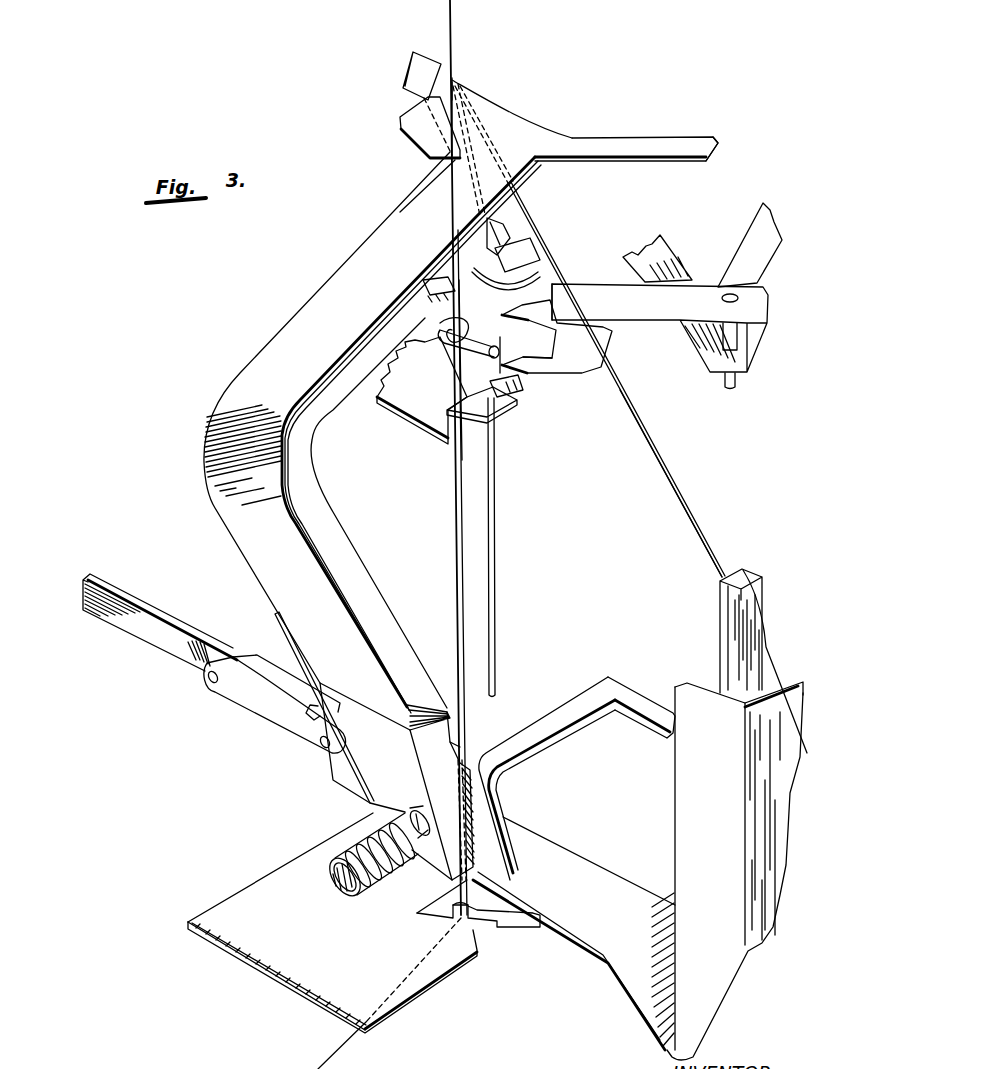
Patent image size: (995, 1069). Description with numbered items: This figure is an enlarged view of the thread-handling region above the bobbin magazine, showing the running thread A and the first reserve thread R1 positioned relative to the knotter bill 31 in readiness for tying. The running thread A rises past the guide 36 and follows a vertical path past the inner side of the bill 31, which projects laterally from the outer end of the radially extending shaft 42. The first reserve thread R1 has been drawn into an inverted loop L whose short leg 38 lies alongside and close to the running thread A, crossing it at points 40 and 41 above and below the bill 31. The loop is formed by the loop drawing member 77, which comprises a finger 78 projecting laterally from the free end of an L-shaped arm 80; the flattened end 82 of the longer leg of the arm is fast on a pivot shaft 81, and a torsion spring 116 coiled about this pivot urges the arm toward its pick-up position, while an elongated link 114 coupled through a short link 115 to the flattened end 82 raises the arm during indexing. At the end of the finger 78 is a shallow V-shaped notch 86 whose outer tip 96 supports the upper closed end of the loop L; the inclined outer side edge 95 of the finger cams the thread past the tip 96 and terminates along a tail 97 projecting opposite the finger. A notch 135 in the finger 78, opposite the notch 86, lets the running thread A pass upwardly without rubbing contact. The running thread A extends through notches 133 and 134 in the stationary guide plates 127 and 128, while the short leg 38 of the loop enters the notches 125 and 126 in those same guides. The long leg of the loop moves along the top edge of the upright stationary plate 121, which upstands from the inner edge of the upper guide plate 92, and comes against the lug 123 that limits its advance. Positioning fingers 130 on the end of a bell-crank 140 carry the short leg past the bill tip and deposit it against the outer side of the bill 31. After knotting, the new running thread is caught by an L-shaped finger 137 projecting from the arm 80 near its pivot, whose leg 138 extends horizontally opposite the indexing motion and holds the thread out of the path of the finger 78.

The bill 31 is at (440, 336).
The guide 36 is at (452, 913).
The short leg 38 is at (495, 528).
The crossing point 40 is at (450, 313).
The crossing point 41 is at (450, 367).
The shaft 42 is at (533, 252).
The loop drawing member 77 is at (447, 95).
The finger 78 is at (508, 138).
The arm 80 is at (291, 345).
The pivot shaft 81 is at (413, 812).
The flattened end 82 is at (383, 747).
The notch 86 is at (422, 101).
The upper guide plate 92 is at (288, 960).
The outer side edge 95 is at (603, 135).
The outer tip 96 is at (422, 62).
The tail 97 is at (657, 146).
The elongated link 114 is at (140, 624).
The short link 115 is at (268, 700).
The torsion spring 116 is at (330, 858).
The upright stationary plate 121 is at (781, 763).
The lug 123 is at (756, 606).
The notch 125 is at (510, 235).
The notch 126 is at (517, 393).
The stationary guide 127 is at (515, 290).
The stationary guide 128 is at (423, 410).
The positioning fingers 130 is at (512, 358).
The notch 133 is at (430, 278).
The notch 134 is at (470, 415).
The notch 135 is at (483, 122).
The L-shaped finger 137 is at (540, 725).
The leg 138 is at (652, 708).
The bell-crank 140 is at (640, 307).
The running thread A is at (453, 570).
The inverted loop L is at (624, 416).
The first reserve thread R1 is at (677, 482).